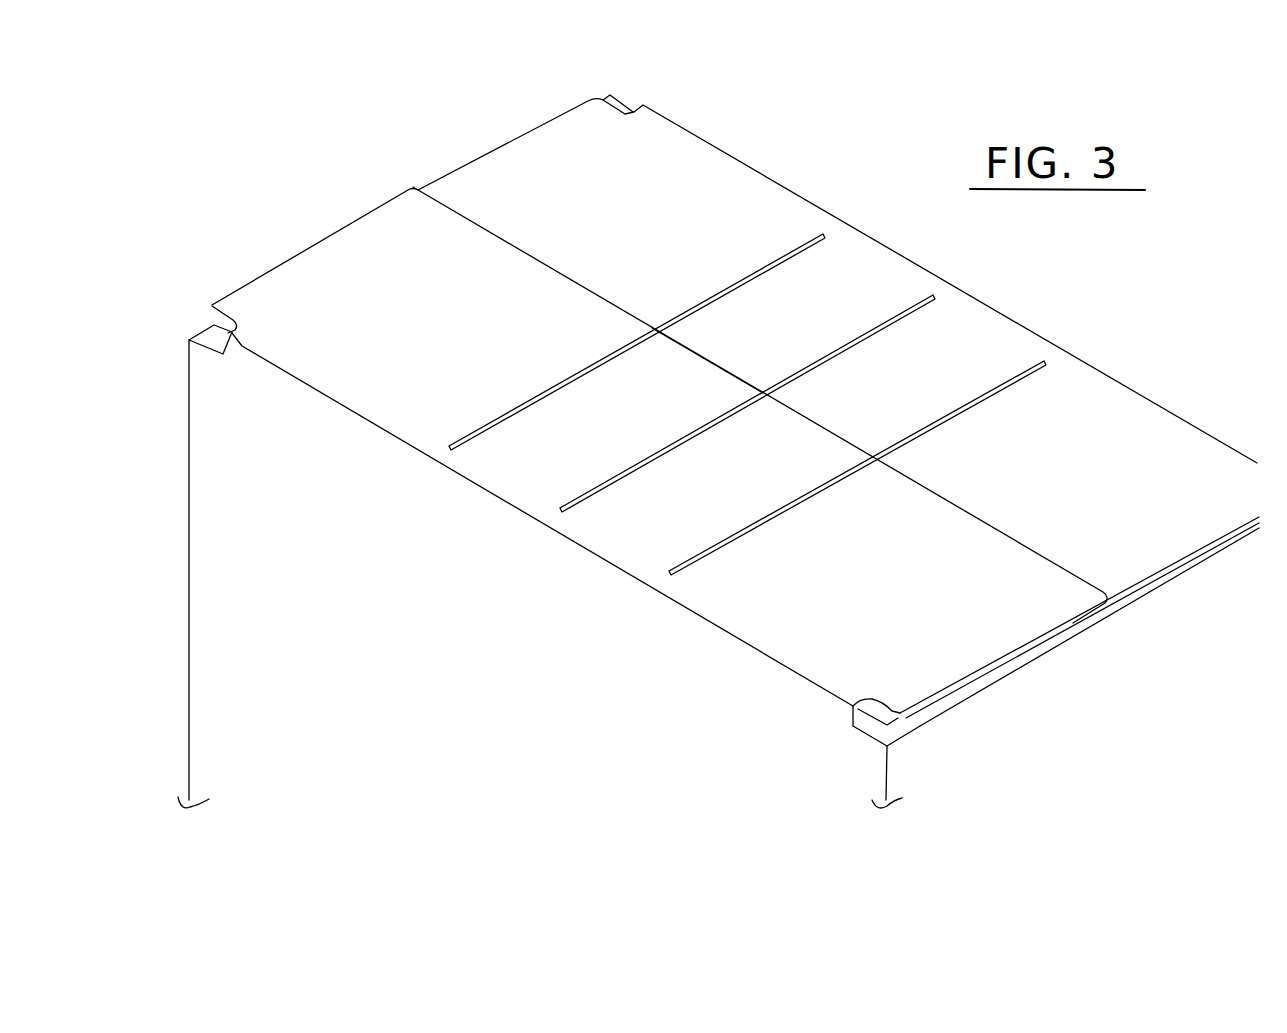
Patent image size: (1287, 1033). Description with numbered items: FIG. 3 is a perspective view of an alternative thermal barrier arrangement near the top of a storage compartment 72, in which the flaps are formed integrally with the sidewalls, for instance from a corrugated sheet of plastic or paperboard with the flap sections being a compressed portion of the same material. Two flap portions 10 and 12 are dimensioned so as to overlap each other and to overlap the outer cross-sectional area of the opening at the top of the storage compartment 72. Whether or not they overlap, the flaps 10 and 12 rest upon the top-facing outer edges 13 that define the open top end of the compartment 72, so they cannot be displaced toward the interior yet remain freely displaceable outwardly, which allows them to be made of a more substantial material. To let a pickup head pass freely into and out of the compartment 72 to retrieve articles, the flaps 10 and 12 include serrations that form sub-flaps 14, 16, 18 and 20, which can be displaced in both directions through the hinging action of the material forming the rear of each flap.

The flap portion 10 is at (995, 630).
The flap portion 12 is at (1175, 553).
The top-facing outer edge 13 is at (217, 327).
The sub-flap 14 is at (637, 342).
The sub-flap 16 is at (747, 403).
The sub-flap 18 is at (701, 375).
The sub-flap 20 is at (857, 468).
The storage compartment 72 is at (440, 688).